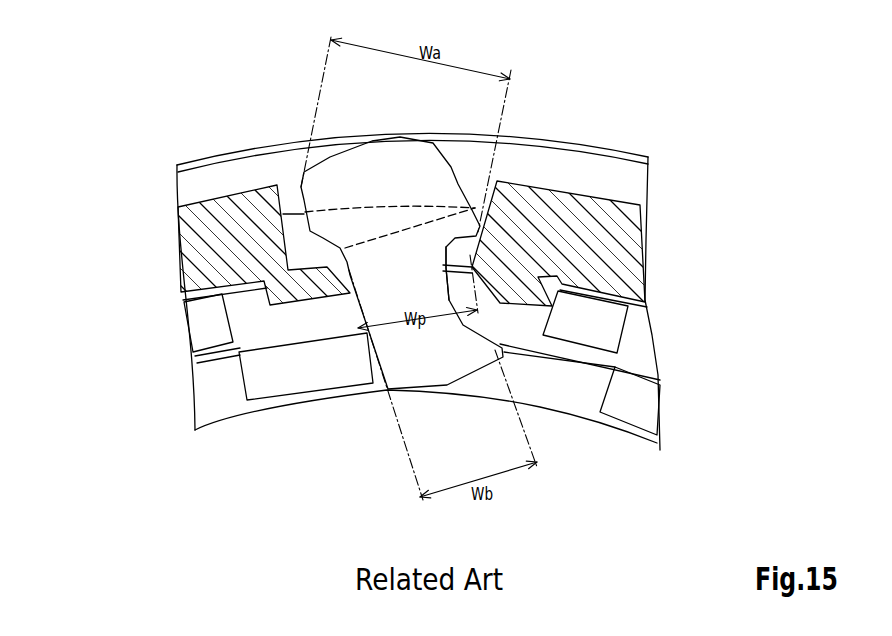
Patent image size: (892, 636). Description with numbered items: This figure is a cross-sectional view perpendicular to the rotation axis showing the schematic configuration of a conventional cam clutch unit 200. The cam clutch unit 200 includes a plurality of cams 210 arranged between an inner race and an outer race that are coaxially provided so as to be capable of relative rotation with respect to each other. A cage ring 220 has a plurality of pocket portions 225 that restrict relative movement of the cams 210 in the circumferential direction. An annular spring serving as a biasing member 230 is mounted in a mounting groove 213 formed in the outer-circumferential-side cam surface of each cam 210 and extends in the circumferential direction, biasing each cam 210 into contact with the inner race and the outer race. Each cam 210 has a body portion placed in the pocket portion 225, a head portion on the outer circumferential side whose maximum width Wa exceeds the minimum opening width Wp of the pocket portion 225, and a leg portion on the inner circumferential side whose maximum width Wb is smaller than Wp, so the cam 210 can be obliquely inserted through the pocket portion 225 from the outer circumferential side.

The cam clutch unit 200 is at (328, 539).
The cam 210 is at (306, 240).
The mounting groove 213 is at (396, 233).
The cage ring 220 is at (581, 207).
The pocket portion 225 is at (459, 283).
The biasing member 230 is at (262, 163).